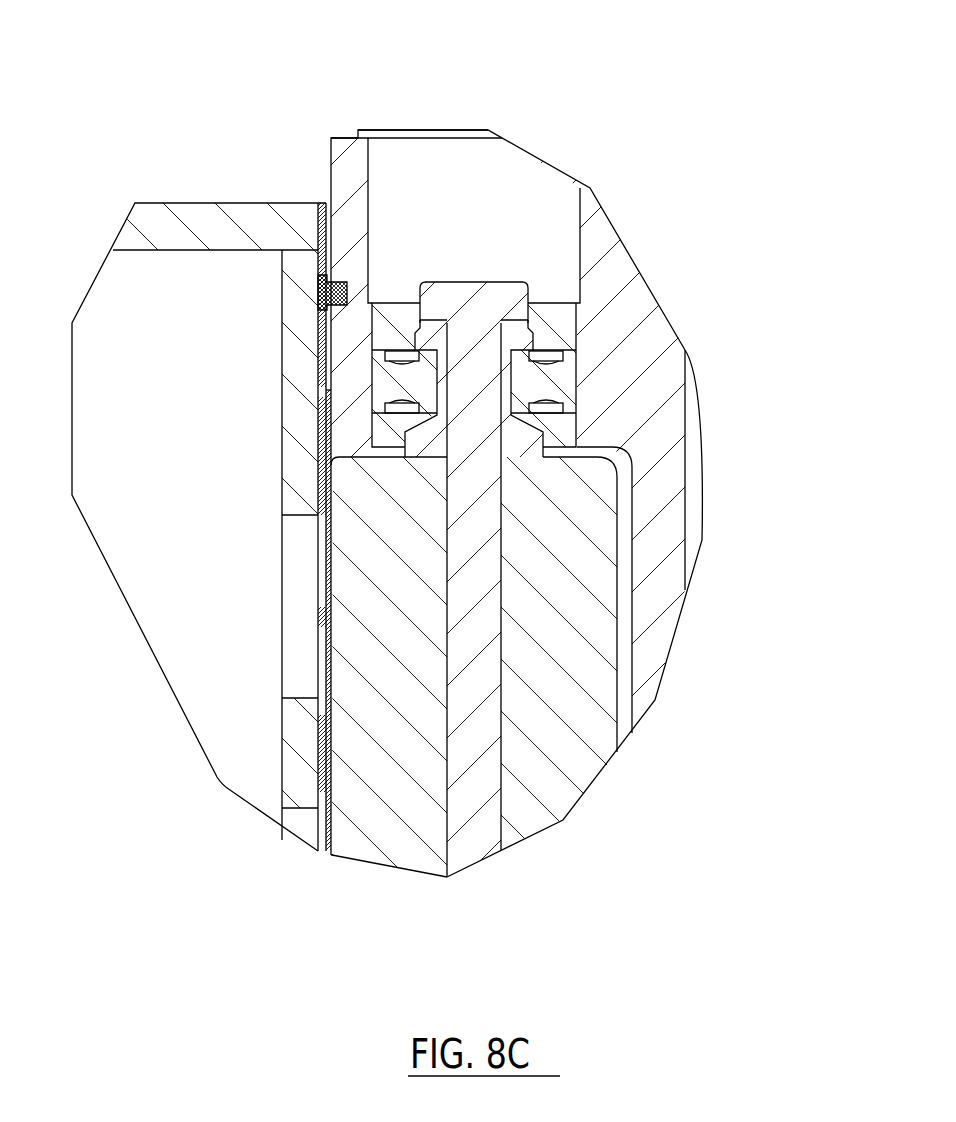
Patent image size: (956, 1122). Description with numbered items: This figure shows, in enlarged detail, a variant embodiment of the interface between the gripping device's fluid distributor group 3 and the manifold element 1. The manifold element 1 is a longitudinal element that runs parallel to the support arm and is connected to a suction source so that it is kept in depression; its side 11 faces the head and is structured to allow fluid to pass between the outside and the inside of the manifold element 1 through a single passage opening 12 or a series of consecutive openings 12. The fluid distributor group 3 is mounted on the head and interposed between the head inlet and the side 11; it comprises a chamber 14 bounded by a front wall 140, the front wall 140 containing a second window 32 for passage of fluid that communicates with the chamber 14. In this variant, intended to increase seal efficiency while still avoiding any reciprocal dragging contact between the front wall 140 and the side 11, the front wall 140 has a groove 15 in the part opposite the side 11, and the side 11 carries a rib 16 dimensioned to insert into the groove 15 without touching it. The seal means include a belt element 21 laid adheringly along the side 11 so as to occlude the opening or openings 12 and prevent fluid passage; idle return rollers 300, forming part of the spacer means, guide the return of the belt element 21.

The manifold element 1 is at (105, 433).
The side 11 is at (293, 297).
The passage opening 12 is at (287, 582).
The belt element 21 is at (333, 686).
The rib 16 is at (333, 292).
The front wall 140 is at (347, 167).
The groove 15 is at (337, 263).
The fluid distributor group 3 is at (494, 122).
The second window 32 is at (448, 370).
The chamber 14 is at (577, 437).
The idle return rollers 300 is at (568, 788).